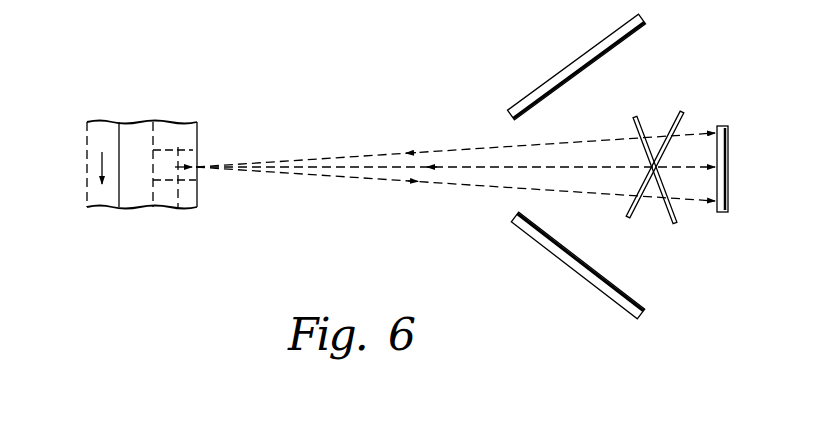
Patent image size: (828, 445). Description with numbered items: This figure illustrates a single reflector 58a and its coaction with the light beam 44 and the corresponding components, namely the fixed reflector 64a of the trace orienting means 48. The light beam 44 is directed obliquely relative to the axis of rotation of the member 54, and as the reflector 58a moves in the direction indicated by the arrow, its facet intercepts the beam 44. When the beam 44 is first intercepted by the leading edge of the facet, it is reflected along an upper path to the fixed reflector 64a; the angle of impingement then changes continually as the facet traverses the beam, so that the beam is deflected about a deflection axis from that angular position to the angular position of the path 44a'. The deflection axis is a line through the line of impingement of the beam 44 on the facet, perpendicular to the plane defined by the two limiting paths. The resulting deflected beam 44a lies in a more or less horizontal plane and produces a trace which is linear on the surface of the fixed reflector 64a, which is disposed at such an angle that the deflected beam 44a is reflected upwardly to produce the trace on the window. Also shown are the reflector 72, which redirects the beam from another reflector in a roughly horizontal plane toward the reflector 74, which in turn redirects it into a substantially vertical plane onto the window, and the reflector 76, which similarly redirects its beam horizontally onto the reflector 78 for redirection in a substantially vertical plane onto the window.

The member 54 is at (95, 149).
The reflector 58a is at (182, 153).
The light beam 44 is at (178, 207).
The deflected beam 44a is at (455, 139).
The path 44a' is at (455, 198).
The trace orienting means 48 is at (500, 214).
The reflector 74 is at (625, 31).
The reflector 78 is at (642, 306).
The reflector 72 is at (676, 112).
The reflector 76 is at (667, 225).
The fixed reflector 64a is at (729, 188).